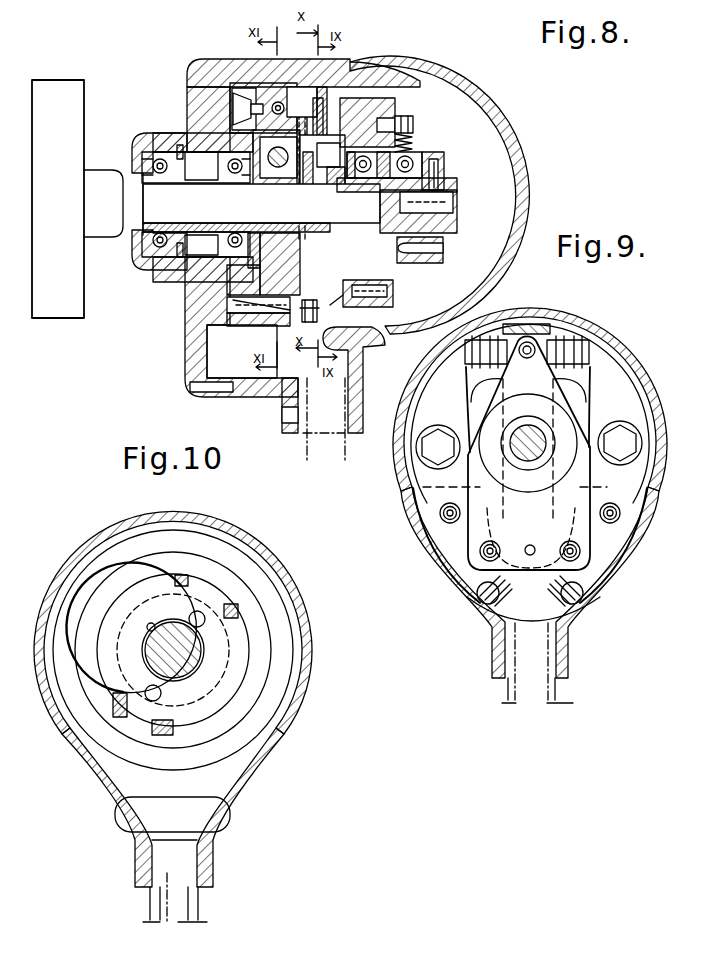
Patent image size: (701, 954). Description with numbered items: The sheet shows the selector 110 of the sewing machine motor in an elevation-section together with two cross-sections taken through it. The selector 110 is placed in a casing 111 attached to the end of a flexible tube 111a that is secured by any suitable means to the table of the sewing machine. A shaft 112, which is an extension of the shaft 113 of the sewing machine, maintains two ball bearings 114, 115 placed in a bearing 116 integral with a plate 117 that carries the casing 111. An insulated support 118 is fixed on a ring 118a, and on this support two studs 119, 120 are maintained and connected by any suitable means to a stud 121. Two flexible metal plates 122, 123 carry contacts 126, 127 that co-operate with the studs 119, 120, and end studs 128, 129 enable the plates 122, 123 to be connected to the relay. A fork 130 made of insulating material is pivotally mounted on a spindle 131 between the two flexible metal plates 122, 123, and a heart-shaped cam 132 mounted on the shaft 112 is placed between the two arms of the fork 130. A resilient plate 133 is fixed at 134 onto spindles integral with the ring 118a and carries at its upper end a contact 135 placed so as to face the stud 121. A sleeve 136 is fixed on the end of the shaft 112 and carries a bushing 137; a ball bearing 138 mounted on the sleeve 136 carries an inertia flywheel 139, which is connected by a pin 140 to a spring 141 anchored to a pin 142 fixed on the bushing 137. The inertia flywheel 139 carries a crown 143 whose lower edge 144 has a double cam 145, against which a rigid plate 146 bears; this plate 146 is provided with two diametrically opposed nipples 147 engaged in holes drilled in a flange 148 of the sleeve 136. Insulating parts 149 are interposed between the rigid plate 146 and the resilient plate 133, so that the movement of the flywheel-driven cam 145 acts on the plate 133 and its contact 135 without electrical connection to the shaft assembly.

In FIG. 8, the selector 110 is at (372, 76).
In FIG. 8, the casing 111 is at (452, 116).
In FIG. 9, the casing 111 is at (643, 403).
In FIG. 10, the casing 111 is at (72, 563).
In FIG. 8, the flexible tube 111a is at (305, 452).
In FIG. 9, the flexible tube 111a is at (558, 680).
In FIG. 10, the flexible tube 111a is at (147, 887).
In FIG. 8, the shaft 112 is at (148, 195).
In FIG. 9, the shaft 112 is at (553, 460).
In FIG. 10, the shaft 112 is at (146, 660).
In FIG. 8, the shaft of the sewing machine 113 is at (58, 95).
In FIG. 8, the ball bearing 114 is at (150, 140).
In FIG. 8, the ball bearing 115 is at (196, 164).
In FIG. 8, the bearing 116 is at (197, 247).
In FIG. 8, the plate 117 is at (187, 82).
In FIG. 8, the insulated support 118 is at (262, 82).
In FIG. 8, the ring 118a is at (237, 282).
In FIG. 9, the stud 119 is at (497, 403).
In FIG. 9, the stud 120 is at (567, 343).
In FIG. 8, the stud 121 is at (345, 66).
In FIG. 9, the flexible metal plate 122 is at (463, 365).
In FIG. 9, the flexible metal plate 123 is at (592, 368).
In FIG. 9, the contact 126 is at (463, 367).
In FIG. 9, the contact 127 is at (580, 352).
In FIG. 9, the end stud 128 is at (480, 587).
In FIG. 9, the end stud 129 is at (580, 590).
In FIG. 8, the fork 130 is at (233, 223).
In FIG. 9, the fork 130 is at (407, 493).
In FIG. 8, the spindle 131 is at (314, 318).
In FIG. 9, the heart-shaped cam 132 is at (547, 427).
In FIG. 8, the resilient plate 133 is at (230, 287).
In FIG. 9, the resilient plate 133 is at (643, 500).
In FIG. 8, the fixing point 134 is at (233, 305).
In FIG. 9, the fixing point 134 is at (480, 551).
In FIG. 8, the contact 135 is at (298, 80).
In FIG. 9, the contact 135 is at (528, 347).
In FIG. 8, the sleeve 136 is at (442, 177).
In FIG. 8, the bushing 137 is at (442, 160).
In FIG. 8, the ball bearing 138 is at (402, 120).
In FIG. 9, the ball bearing 138 is at (545, 340).
In FIG. 8, the inertia flywheel 139 is at (392, 268).
In FIG. 8, the pin 140 is at (413, 123).
In FIG. 8, the spring 141 is at (413, 147).
In FIG. 8, the pin 142 is at (430, 250).
In FIG. 8, the crown 143 is at (390, 298).
In FIG. 10, the crown 143 is at (250, 707).
In FIG. 8, the lower edge 144 is at (353, 303).
In FIG. 8, the double cam 145 is at (357, 80).
In FIG. 10, the double cam 145 is at (233, 608).
In FIG. 8, the rigid plate 146 is at (272, 248).
In FIG. 10, the rigid plate 146 is at (225, 670).
In FIG. 8, the nipple 147 is at (328, 162).
In FIG. 8, the flange 148 is at (380, 123).
In FIG. 8, the insulating part 149 is at (280, 223).